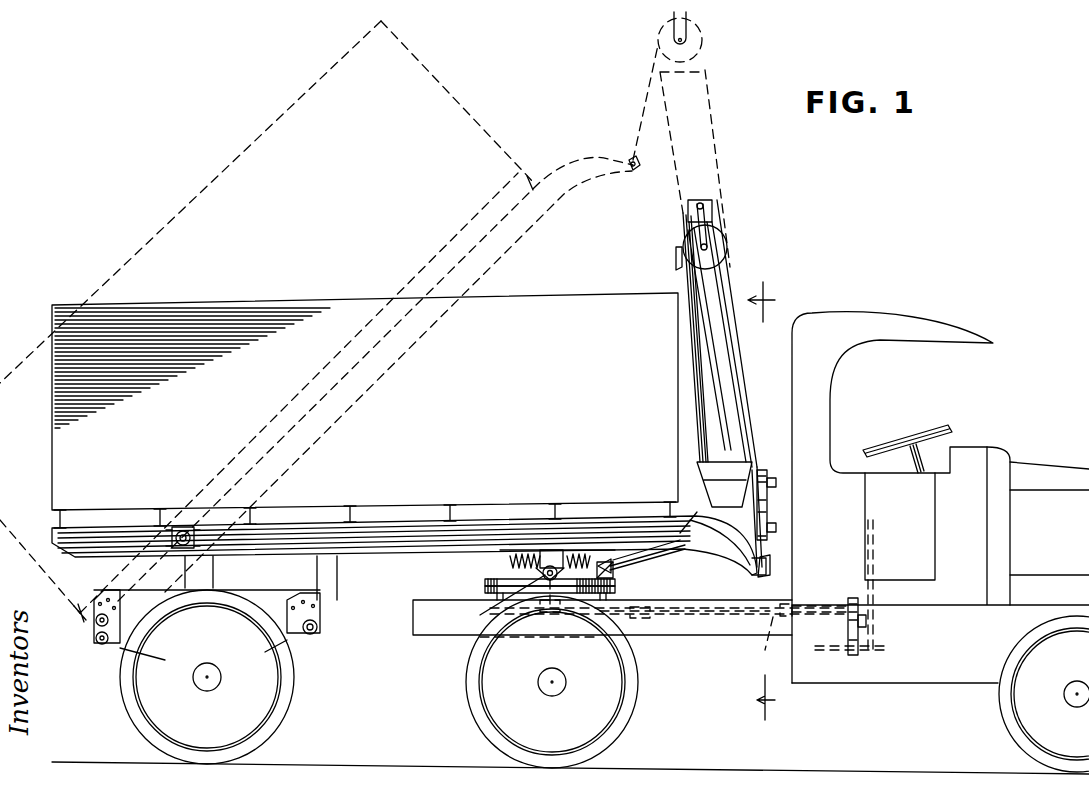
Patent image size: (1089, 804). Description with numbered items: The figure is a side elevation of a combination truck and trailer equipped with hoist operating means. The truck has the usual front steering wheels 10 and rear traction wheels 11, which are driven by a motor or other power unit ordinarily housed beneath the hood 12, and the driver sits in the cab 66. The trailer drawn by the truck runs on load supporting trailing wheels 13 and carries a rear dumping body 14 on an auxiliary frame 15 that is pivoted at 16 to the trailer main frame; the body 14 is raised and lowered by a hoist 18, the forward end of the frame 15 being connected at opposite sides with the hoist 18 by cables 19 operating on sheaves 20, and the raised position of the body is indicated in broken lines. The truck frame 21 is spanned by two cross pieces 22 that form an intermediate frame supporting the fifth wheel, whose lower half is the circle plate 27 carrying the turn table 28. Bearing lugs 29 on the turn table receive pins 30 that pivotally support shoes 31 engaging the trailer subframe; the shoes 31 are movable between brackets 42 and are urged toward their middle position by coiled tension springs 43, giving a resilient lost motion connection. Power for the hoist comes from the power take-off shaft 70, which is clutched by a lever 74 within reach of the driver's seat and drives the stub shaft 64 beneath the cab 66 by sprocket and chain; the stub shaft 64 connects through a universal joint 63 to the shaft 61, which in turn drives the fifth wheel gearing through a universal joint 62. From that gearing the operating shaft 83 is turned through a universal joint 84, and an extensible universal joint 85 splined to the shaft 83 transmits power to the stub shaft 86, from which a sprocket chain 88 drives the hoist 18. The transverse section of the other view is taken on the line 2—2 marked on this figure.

The front steering wheels 10 is at (1003, 700).
The rear traction wheels 11 is at (636, 702).
The hood 12 is at (1032, 500).
The trailing wheels 13 is at (295, 690).
The rear dumping body 14 is at (471, 116).
The auxiliary frame 15 is at (432, 522).
The pivot 16 is at (200, 525).
The hoist 18 is at (733, 367).
The cables 19 is at (703, 330).
The sheaves 20 is at (717, 245).
The truck frame 21 is at (722, 630).
The cross pieces 22 is at (617, 597).
The circle plate 27 is at (485, 590).
The turn table 28 is at (490, 582).
The bearing lugs 29 is at (507, 565).
The pins 30 is at (509, 600).
The shoes 31 is at (563, 553).
The brackets 42 is at (620, 552).
The coiled tension springs 43 is at (535, 552).
The shaft 61 is at (685, 610).
The universal joint 62 is at (633, 620).
The universal joint 63 is at (770, 642).
The stub shaft 64 is at (815, 603).
The cab 66 is at (822, 437).
The power take-off shaft 70 is at (817, 650).
The lever 74 is at (873, 557).
The operating shaft 83 is at (648, 557).
The universal joint 84 is at (614, 574).
The extensible universal joint 85 is at (717, 557).
The stub shaft 86 is at (778, 530).
The sprocket chain 88 is at (778, 507).
The section line 2 is at (763, 495).